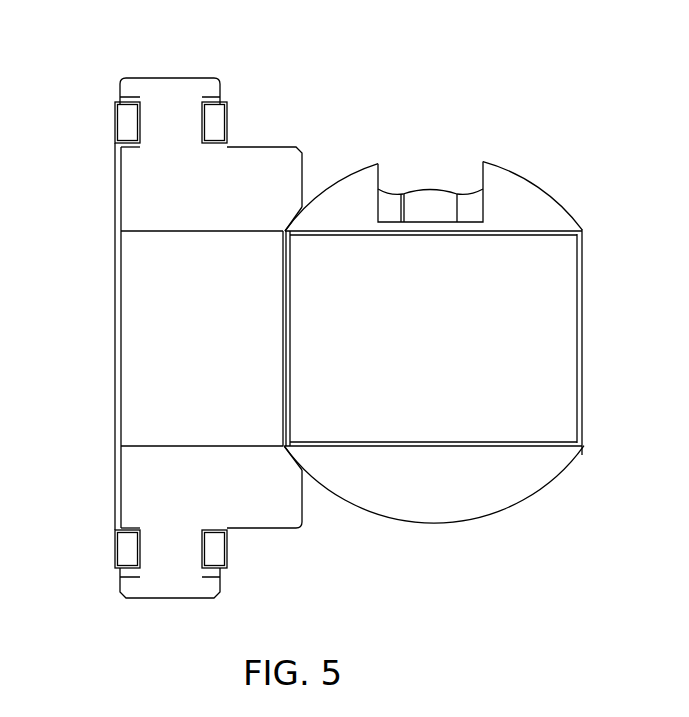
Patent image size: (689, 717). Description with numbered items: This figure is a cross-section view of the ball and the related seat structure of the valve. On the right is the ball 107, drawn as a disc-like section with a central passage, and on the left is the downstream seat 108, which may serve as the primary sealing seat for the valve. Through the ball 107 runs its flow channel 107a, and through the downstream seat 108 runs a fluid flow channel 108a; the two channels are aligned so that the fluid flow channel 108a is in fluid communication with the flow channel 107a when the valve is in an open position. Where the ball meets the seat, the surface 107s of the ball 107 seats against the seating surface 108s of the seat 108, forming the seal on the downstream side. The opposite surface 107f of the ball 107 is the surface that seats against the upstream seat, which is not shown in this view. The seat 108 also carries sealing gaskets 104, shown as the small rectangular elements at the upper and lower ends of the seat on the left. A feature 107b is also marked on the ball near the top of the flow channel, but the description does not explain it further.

The mounting tabs 104 is at (127, 124).
The flange wheel 107 is at (537, 230).
The flange band 107a is at (462, 342).
The flange slot insert 107b is at (478, 207).
The flange upper shoulder 107s is at (297, 218).
The flange lower arc 107f is at (567, 470).
The hub body 108 is at (177, 93).
The hub band 108a is at (228, 320).
The hub shoulder 108s is at (293, 460).